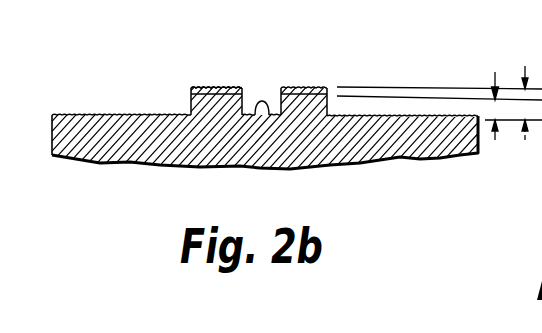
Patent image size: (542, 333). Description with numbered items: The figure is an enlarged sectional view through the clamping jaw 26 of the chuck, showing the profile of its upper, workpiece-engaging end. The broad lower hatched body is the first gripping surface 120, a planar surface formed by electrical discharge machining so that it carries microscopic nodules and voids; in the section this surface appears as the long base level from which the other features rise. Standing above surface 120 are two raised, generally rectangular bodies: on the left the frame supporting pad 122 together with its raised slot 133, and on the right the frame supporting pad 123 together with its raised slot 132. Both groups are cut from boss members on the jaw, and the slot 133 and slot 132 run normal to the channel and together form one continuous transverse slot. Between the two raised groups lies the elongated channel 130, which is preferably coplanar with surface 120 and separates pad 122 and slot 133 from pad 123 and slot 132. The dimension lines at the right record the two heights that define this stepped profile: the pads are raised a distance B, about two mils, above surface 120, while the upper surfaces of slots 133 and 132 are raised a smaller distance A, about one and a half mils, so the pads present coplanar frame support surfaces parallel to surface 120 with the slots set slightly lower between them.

The first gripping surface 120 is at (108, 113).
The frame supporting pad 122 is at (203, 86).
The raised slot 133 is at (231, 86).
The clamping jaw 26 is at (215, 72).
The frame supporting pad 123 is at (318, 87).
The raised slot 132 is at (298, 87).
The elongated channel 130 is at (264, 112).
The distance A is at (496, 136).
The distance B is at (525, 66).